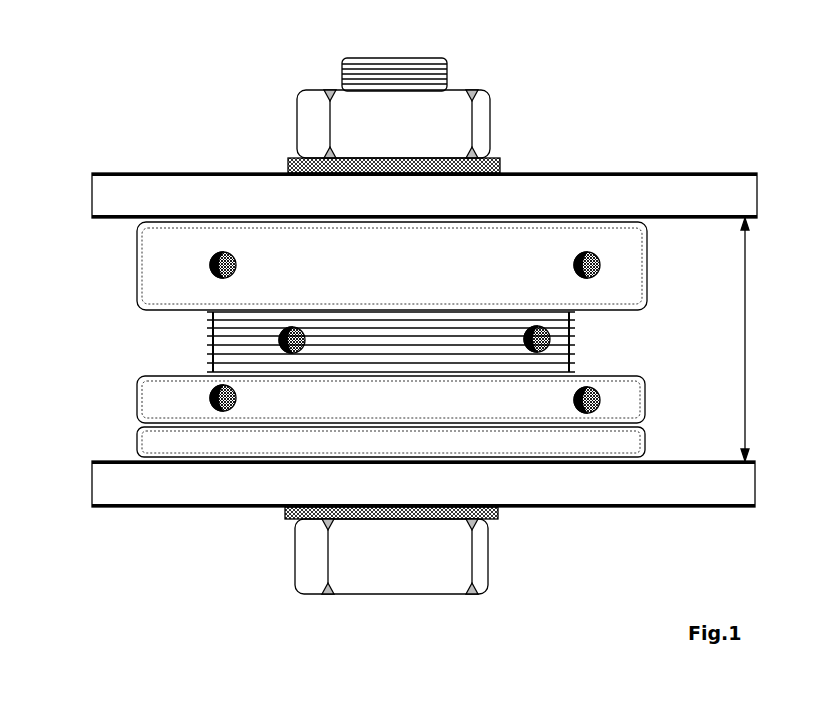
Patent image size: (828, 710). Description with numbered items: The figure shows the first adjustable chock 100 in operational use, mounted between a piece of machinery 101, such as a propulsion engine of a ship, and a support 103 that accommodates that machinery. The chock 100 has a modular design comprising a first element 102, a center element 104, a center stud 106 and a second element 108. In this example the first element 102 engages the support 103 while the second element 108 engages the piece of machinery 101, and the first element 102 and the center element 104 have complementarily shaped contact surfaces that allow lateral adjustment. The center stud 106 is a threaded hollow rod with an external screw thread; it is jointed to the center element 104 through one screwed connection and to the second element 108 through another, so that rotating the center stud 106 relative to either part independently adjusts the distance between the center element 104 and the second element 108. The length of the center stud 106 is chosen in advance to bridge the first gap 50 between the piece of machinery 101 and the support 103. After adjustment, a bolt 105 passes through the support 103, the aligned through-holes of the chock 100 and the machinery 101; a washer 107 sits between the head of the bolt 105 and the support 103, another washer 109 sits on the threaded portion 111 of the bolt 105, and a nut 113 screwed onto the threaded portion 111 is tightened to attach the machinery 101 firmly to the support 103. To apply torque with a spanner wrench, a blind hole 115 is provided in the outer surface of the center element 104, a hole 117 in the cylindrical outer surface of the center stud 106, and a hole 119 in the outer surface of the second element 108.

The first gap 50 is at (746, 372).
The first adjustable chock 100 is at (375, 339).
The piece of machinery 101 is at (593, 182).
The first element 102 is at (623, 443).
The support 103 is at (633, 493).
The center element 104 is at (422, 397).
The bolt 105 is at (310, 552).
The center stud 106 is at (426, 322).
The washer 107 is at (293, 520).
The second element 108 is at (427, 266).
The washer 109 is at (297, 160).
The threaded portion 111 is at (377, 65).
The nut 113 is at (313, 115).
The blind hole 115 is at (237, 398).
The hole 117 is at (300, 333).
The hole 119 is at (237, 265).